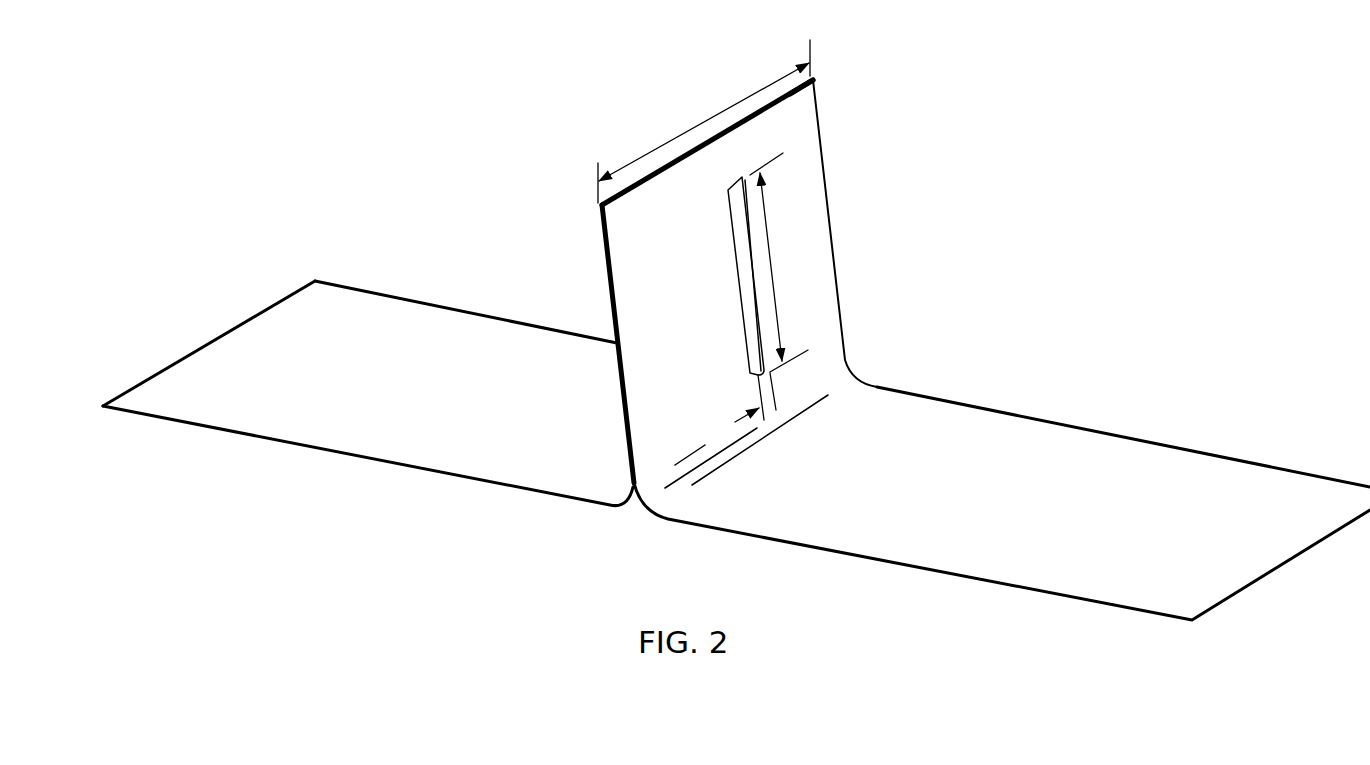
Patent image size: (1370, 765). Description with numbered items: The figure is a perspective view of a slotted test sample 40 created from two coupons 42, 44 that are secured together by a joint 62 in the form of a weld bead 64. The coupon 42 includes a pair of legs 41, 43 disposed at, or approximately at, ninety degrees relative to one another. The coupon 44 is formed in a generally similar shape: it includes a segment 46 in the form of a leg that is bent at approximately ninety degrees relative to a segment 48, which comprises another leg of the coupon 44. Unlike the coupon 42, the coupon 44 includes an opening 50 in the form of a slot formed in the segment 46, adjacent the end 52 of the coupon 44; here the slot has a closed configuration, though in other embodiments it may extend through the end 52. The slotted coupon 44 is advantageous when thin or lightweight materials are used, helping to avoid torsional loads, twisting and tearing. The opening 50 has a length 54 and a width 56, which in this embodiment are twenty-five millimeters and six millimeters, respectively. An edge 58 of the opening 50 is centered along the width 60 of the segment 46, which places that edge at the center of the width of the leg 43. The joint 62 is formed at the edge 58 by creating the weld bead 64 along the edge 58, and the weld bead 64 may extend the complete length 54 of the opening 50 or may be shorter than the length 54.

The test sample 40 is at (996, 207).
The leg 41 is at (357, 460).
The coupon 42 is at (416, 296).
The leg 43 is at (615, 358).
The coupon 44 is at (1111, 428).
The segment 46 is at (683, 301).
The segment 48 is at (1027, 511).
The opening 50 is at (735, 185).
The end 52 is at (813, 80).
The length 54 is at (781, 253).
The width 56 is at (784, 393).
The edge 58 is at (757, 377).
The width 60 is at (714, 111).
The joint 62 is at (722, 270).
The weld bead 64 is at (752, 316).